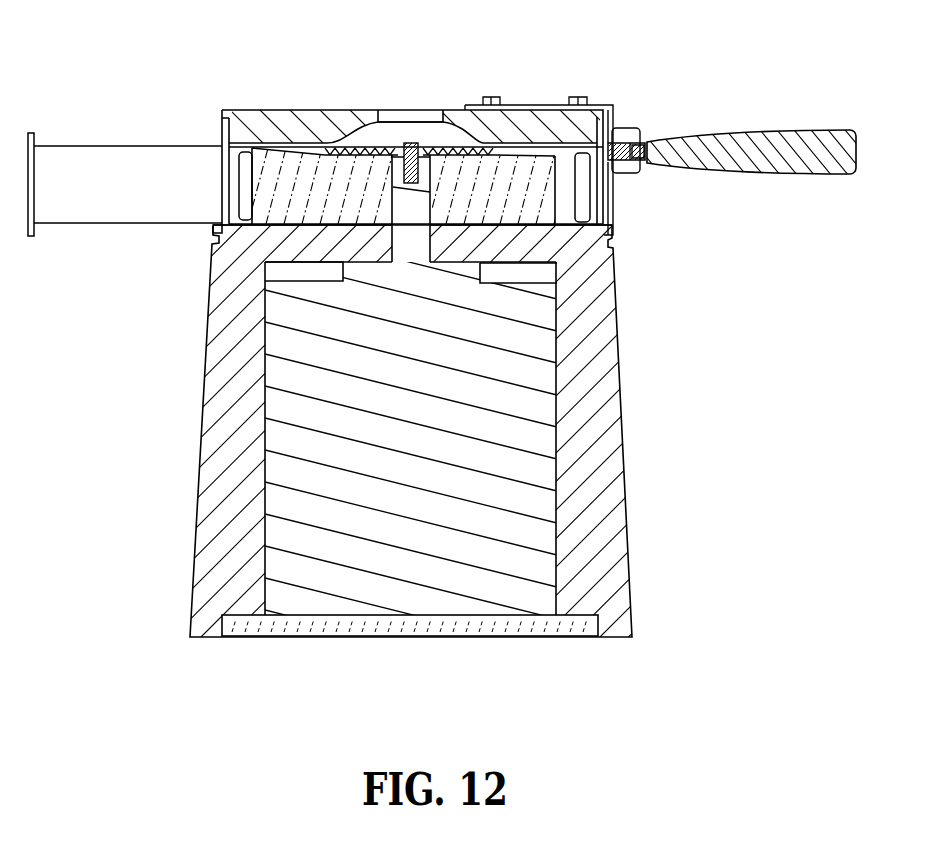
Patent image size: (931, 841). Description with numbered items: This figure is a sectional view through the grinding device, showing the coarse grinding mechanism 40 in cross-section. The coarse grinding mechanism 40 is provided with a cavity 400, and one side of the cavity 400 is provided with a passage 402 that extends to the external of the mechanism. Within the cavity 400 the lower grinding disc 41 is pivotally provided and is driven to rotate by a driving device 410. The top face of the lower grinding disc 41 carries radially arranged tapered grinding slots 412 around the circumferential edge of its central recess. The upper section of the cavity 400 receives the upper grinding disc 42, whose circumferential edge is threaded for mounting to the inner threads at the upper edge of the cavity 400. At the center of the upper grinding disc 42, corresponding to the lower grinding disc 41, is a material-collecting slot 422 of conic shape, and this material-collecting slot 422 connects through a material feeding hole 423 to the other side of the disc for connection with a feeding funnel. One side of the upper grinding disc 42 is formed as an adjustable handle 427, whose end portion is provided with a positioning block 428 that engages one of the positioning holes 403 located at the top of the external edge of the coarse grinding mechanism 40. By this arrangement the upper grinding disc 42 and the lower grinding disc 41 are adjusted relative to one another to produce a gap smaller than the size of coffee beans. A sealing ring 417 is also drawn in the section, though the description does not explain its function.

The coarse grinding mechanism 40 is at (222, 432).
The lower grinding disc 41 is at (518, 168).
The upper grinding disc 42 is at (273, 112).
The cavity 400 is at (230, 152).
The passage 402 is at (82, 167).
The positioning holes 403 is at (612, 165).
The driving device 410 is at (512, 481).
The tapered grinding slots 412 is at (548, 153).
The sealing ring 417 is at (240, 188).
The material-collecting slot 422 is at (357, 127).
The material feeding hole 423 is at (402, 117).
The adjustable handle 427 is at (762, 143).
The positioning block 428 is at (615, 141).